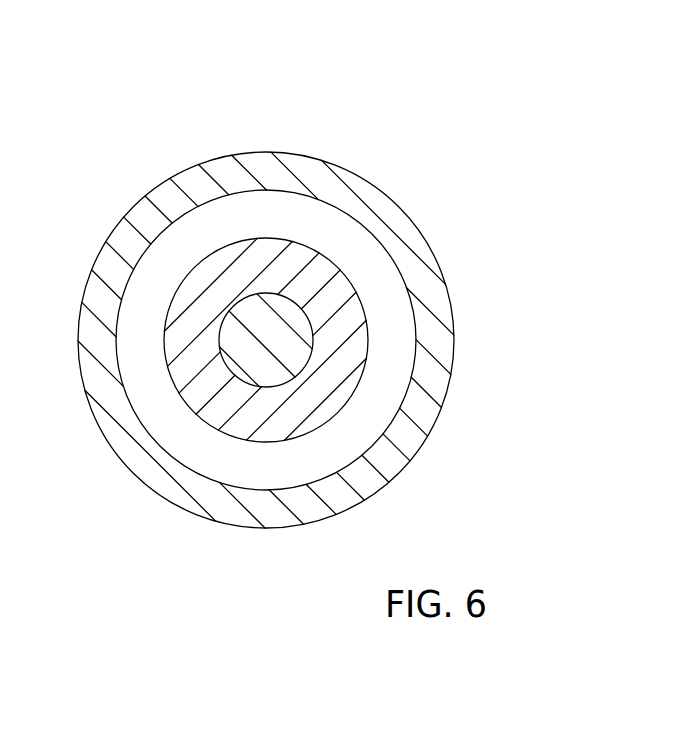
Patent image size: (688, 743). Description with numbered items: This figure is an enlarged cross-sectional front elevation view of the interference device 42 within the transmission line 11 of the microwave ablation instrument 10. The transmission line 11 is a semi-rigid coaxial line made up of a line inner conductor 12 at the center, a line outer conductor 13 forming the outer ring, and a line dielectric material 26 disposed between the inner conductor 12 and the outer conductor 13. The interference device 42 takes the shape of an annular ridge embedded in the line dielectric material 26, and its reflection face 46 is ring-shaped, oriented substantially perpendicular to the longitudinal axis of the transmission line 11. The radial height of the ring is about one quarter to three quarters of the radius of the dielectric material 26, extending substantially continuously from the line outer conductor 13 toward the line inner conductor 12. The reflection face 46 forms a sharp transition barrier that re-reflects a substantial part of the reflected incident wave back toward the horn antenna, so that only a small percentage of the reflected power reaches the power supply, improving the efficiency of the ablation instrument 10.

The microwave ablation instrument 10 is at (468, 125).
The transmission line 11 is at (428, 212).
The line inner conductor 12 is at (440, 347).
The line outer conductor 13 is at (293, 300).
The line dielectric material 26 is at (267, 248).
The interference device 42 is at (183, 483).
The reflection face 46 is at (275, 463).